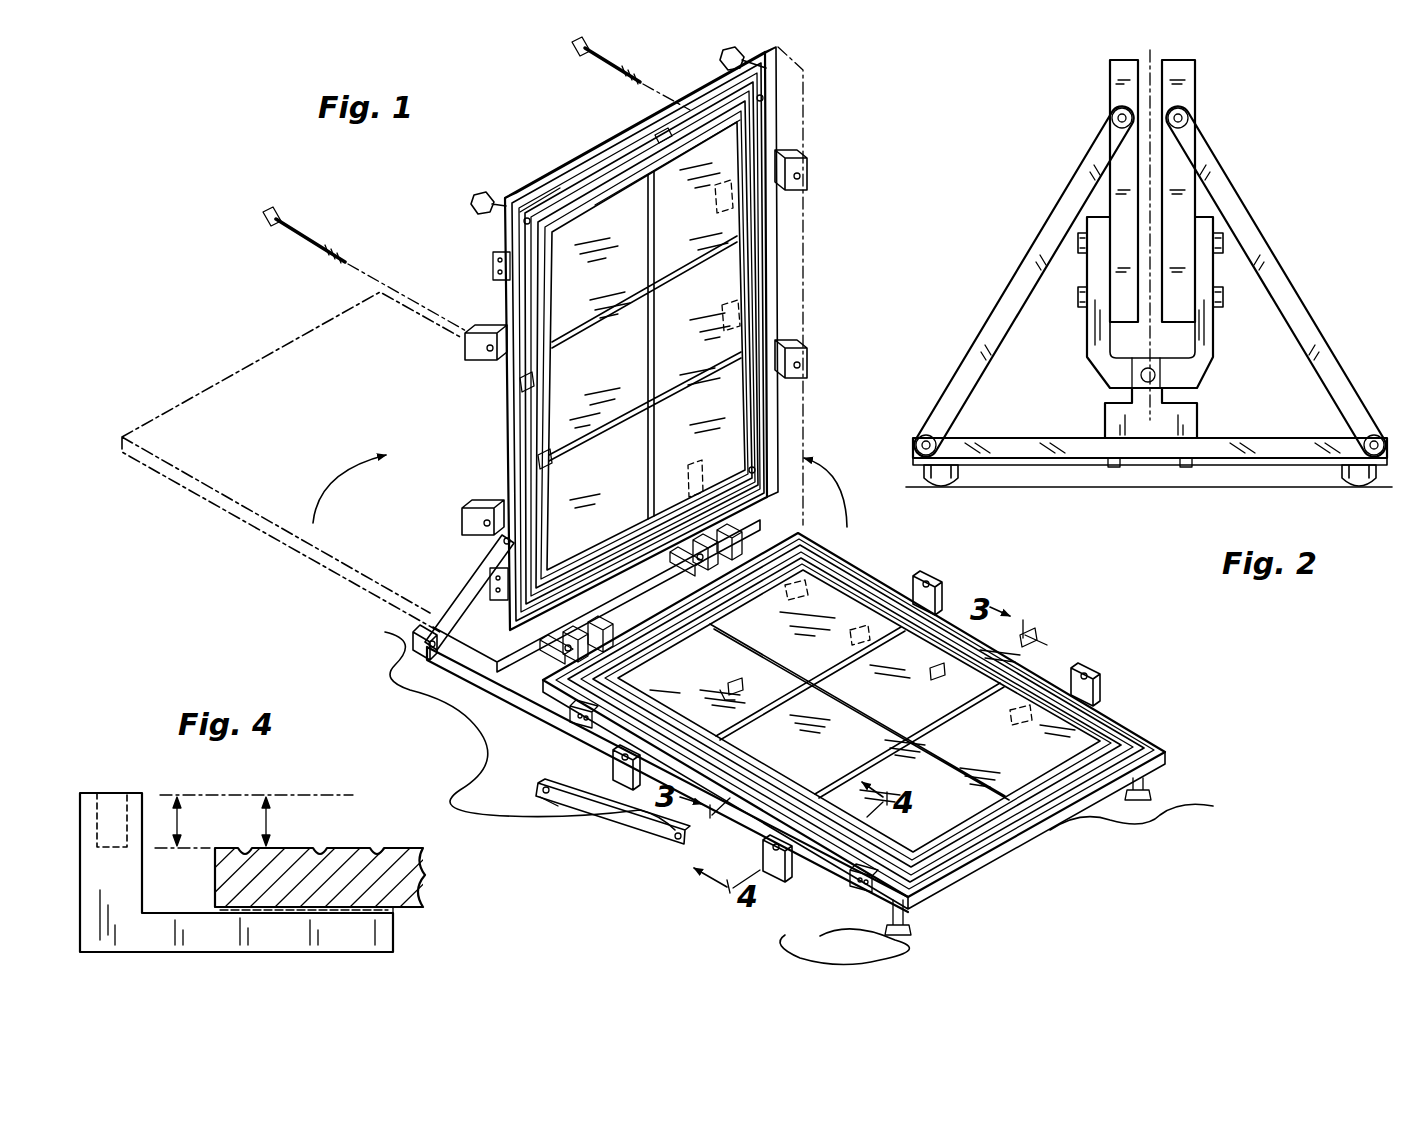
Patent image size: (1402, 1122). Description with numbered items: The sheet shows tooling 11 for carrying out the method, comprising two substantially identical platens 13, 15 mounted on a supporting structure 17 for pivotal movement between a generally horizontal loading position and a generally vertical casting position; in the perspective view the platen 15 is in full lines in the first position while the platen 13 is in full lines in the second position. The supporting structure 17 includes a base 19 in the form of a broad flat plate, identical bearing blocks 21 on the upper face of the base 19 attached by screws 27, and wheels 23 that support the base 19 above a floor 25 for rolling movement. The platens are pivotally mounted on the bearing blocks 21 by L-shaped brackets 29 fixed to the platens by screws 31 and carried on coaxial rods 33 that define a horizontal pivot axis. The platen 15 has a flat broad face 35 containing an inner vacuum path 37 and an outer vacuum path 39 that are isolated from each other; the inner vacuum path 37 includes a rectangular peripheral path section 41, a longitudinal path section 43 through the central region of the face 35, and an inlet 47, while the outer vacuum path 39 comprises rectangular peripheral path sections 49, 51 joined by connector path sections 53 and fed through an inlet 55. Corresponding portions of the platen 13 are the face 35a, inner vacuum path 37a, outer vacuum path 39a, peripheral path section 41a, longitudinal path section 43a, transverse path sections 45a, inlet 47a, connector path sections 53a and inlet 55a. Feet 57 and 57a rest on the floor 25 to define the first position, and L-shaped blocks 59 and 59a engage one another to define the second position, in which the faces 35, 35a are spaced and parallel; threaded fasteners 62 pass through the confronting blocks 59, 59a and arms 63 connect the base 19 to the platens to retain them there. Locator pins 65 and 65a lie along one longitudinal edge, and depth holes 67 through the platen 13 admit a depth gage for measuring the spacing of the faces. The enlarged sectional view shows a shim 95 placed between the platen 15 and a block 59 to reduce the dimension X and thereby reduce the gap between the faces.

In FIG. 1, the tooling 11 is at (560, 152).
In FIG. 1, the platen 13 is at (171, 405).
In FIG. 2, the platen 13 is at (1110, 80).
In FIG. 1, the platen 15 is at (808, 136).
In FIG. 2, the platen 15 is at (1195, 84).
In FIG. 4, the platen 15 is at (430, 882).
In FIG. 1, the supporting structure 17 is at (527, 722).
In FIG. 2, the base 19 is at (1245, 470).
In FIG. 1, the bearing blocks 21 is at (565, 614).
In FIG. 2, the bearing blocks 21 is at (1105, 420).
In FIG. 1, the wheels 23 is at (415, 652).
In FIG. 2, the wheels 23 is at (945, 490).
In FIG. 1, the floor 25 is at (790, 790).
In FIG. 2, the floor 25 is at (1060, 478).
In FIG. 2, the screws 27 is at (1184, 470).
In FIG. 1, the hinge block 29 is at (793, 522).
In FIG. 2, the hinge block 29 is at (1090, 358).
In FIG. 2, the screws 31 is at (1078, 243).
In FIG. 1, the rods 33 is at (607, 582).
In FIG. 2, the rods 33 is at (1158, 375).
In FIG. 1, the broad face 35 is at (1010, 842).
In FIG. 1, the inner vacuum path 37 is at (995, 862).
In FIG. 1, the outer vacuum path 39 is at (1018, 868).
In FIG. 1, the peripheral path section 41 is at (790, 745).
In FIG. 1, the longitudinal path section 43 is at (742, 640).
In FIG. 1, the inlet 47 is at (988, 610).
In FIG. 1, the peripheral path section 49 is at (1013, 700).
In FIG. 1, the peripheral path section 51 is at (1115, 722).
In FIG. 1, the connector path sections 53 is at (775, 778).
In FIG. 1, the inlet 55 is at (1037, 663).
In FIG. 1, the feet 57 is at (906, 908).
In FIG. 1, the L-shaped blocks 59 is at (612, 777).
In FIG. 4, the L-shaped blocks 59 is at (142, 878).
In FIG. 1, the threaded fasteners 62 is at (575, 55).
In FIG. 1, the arms 63 is at (470, 588).
In FIG. 2, the arms 63 is at (1050, 214).
In FIG. 1, the locator pins 65 is at (488, 592).
In FIG. 1, the depth holes 67 is at (766, 100).
In FIG. 4, the shim 95 is at (400, 915).
In FIG. 1, the broad face 35a is at (612, 296).
In FIG. 1, the inner vacuum path 37a is at (612, 190).
In FIG. 1, the outer vacuum path 39a is at (566, 192).
In FIG. 1, the peripheral path section 41a is at (672, 165).
In FIG. 1, the longitudinal path section 43a is at (642, 362).
In FIG. 1, the transverse path sections 45a is at (695, 330).
In FIG. 1, the inlet 47a is at (786, 246).
In FIG. 1, the connector path sections 53a is at (657, 136).
In FIG. 1, the inlet 55a is at (780, 280).
In FIG. 1, the feet 57a is at (718, 58).
In FIG. 1, the L-shaped blocks 59a is at (808, 170).
In FIG. 1, the locator pins 65a is at (505, 272).